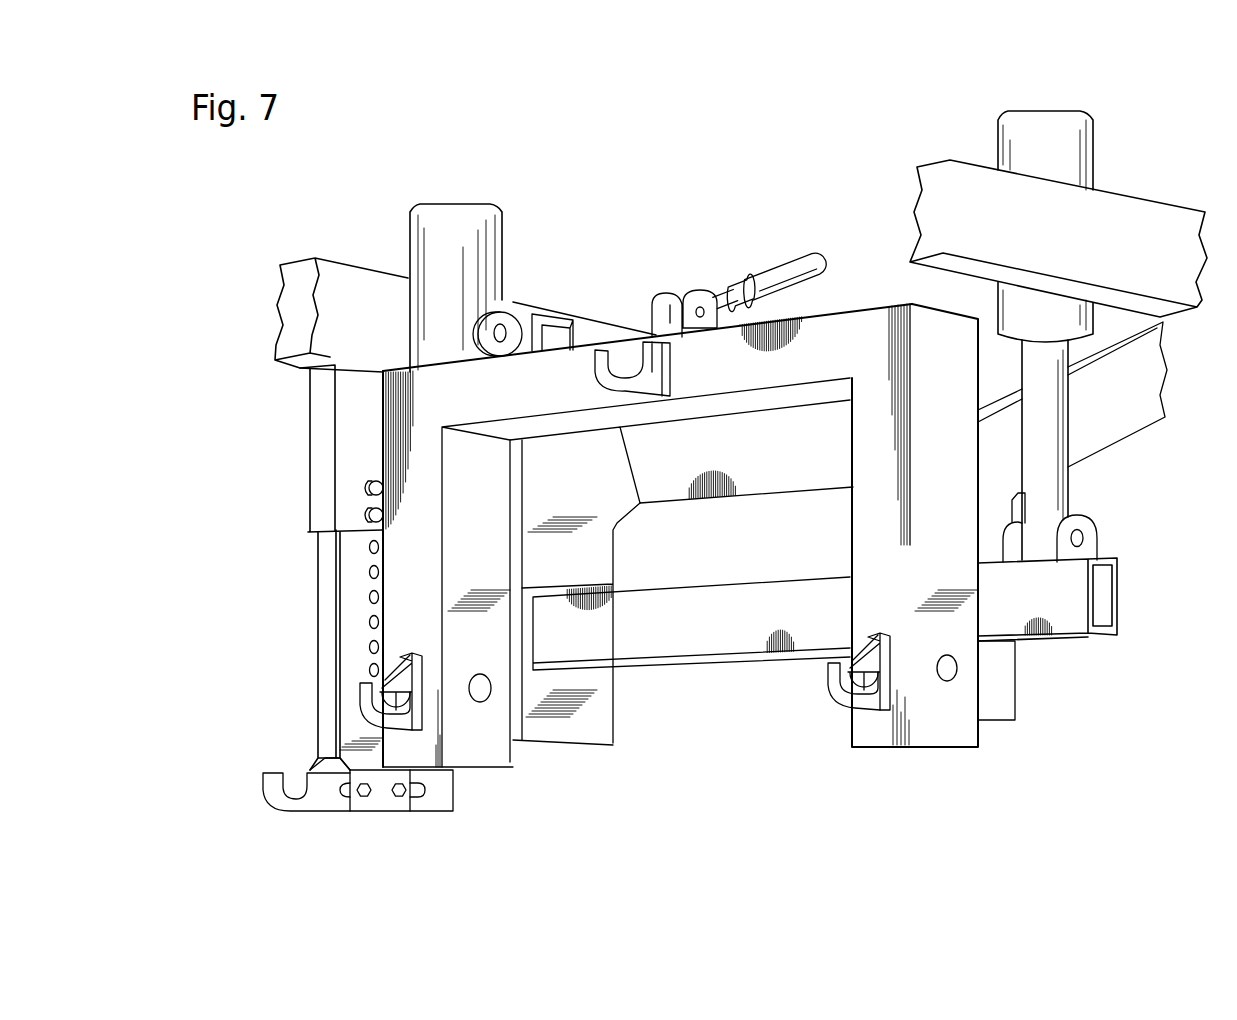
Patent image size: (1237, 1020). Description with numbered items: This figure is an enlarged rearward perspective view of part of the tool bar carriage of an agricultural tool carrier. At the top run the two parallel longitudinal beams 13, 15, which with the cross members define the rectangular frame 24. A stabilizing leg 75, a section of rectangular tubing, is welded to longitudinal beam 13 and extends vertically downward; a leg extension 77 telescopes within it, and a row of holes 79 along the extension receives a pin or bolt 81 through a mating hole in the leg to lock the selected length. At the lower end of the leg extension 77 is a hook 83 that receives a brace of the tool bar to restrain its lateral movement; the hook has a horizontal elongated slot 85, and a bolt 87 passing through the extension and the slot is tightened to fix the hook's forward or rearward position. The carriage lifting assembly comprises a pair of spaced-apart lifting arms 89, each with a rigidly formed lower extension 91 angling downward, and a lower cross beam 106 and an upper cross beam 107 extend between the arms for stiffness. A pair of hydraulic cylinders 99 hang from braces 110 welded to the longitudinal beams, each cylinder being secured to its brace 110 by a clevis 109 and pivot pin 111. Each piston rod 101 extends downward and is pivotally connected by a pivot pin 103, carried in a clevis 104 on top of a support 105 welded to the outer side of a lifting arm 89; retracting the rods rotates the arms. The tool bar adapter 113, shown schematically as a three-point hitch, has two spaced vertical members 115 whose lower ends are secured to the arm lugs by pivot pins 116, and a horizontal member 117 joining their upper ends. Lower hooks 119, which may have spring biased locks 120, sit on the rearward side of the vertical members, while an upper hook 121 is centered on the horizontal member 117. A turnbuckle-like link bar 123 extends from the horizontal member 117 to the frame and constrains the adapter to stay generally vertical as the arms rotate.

The longitudinal beam 13 is at (342, 290).
The longitudinal beam 15 is at (1122, 215).
The rectangular frame 24 is at (967, 157).
The stabilizing leg 75 is at (327, 400).
The leg extension 77 is at (328, 628).
The holes 79 is at (368, 572).
The pin or bolt 81 is at (367, 488).
The hook 83 is at (283, 797).
The elongated slot 85 is at (343, 797).
The bolt 87 is at (397, 797).
The lifting arm 89 is at (608, 473).
The lower extension 91 is at (577, 723).
The hydraulic cylinder 99 is at (457, 230).
The piston rod 101 is at (1047, 472).
The pivot pin 103 is at (1090, 528).
The clevis 104 is at (1097, 538).
The support 105 is at (1113, 593).
The lower cross beam 106 is at (713, 630).
The upper cross beam 107 is at (758, 457).
The clevis 109 is at (521, 337).
The brace 110 is at (557, 320).
The pivot pin 111 is at (500, 333).
The tool bar adapter 113 is at (822, 310).
The vertical member 115 is at (877, 522).
The pivot pin 116 is at (952, 670).
The horizontal member 117 is at (811, 358).
The lower hook 119 is at (837, 698).
The spring biased lock 120 is at (833, 657).
The upper hook 121 is at (663, 373).
The link bar 123 is at (760, 280).